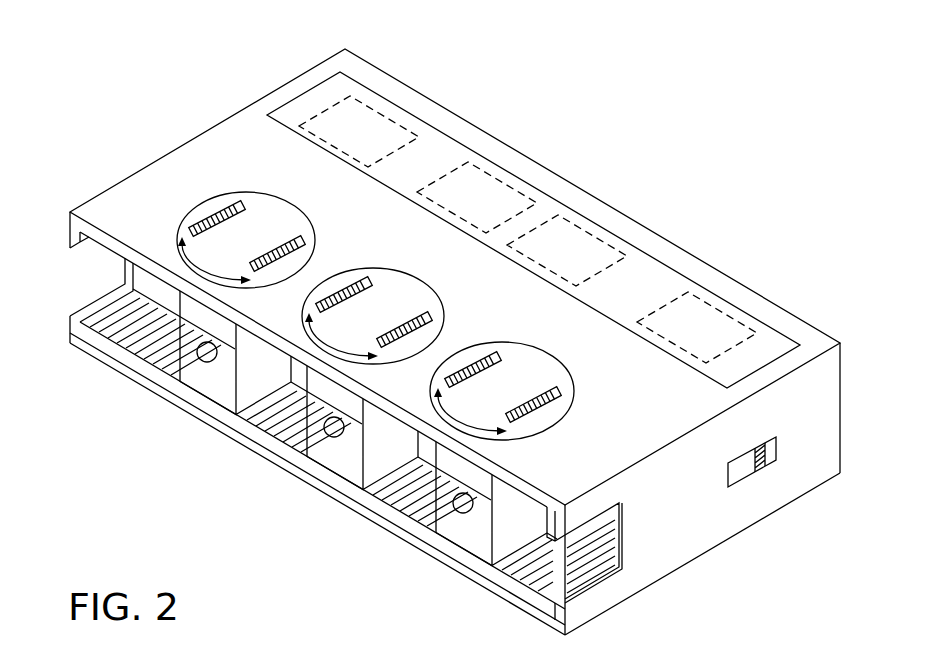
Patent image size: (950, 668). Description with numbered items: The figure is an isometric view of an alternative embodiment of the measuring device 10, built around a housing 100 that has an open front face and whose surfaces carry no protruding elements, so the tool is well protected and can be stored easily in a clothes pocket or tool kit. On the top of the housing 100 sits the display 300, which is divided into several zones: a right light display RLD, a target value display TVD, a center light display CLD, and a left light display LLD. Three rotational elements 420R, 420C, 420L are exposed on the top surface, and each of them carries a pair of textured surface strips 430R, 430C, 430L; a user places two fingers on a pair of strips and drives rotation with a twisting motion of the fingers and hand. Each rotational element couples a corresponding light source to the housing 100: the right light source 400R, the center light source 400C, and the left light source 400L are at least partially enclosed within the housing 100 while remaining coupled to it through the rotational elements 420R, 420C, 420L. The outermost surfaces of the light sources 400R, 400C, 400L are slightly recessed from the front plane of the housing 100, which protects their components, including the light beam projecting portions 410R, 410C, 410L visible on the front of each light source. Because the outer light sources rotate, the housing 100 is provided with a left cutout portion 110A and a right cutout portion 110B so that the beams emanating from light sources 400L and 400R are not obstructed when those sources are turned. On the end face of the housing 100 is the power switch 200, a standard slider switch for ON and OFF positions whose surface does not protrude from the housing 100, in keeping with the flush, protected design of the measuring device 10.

The measuring device 10 is at (758, 154).
The housing 100 is at (806, 313).
The left cutout portion 110A is at (622, 537).
The right cutout portion 110B is at (100, 290).
The power switch 200 is at (777, 445).
The display 300 is at (450, 128).
The right light display RLD is at (360, 118).
The target value display TVD is at (485, 195).
The center light display CLD is at (567, 248).
The left light display LLD is at (697, 322).
The right light source 400R is at (170, 359).
The center light source 400C is at (298, 433).
The left light source 400L is at (426, 507).
The light beam projecting portion 410R is at (200, 357).
The light beam projecting portion 410C is at (328, 435).
The light beam projecting portion 410L is at (456, 510).
The rotational element 420R is at (197, 204).
The rotational element 420C is at (378, 268).
The rotational element 420L is at (517, 343).
The textured surface strips 430R is at (240, 208).
The textured surface strips 430C is at (425, 318).
The textured surface strips 430L is at (553, 391).